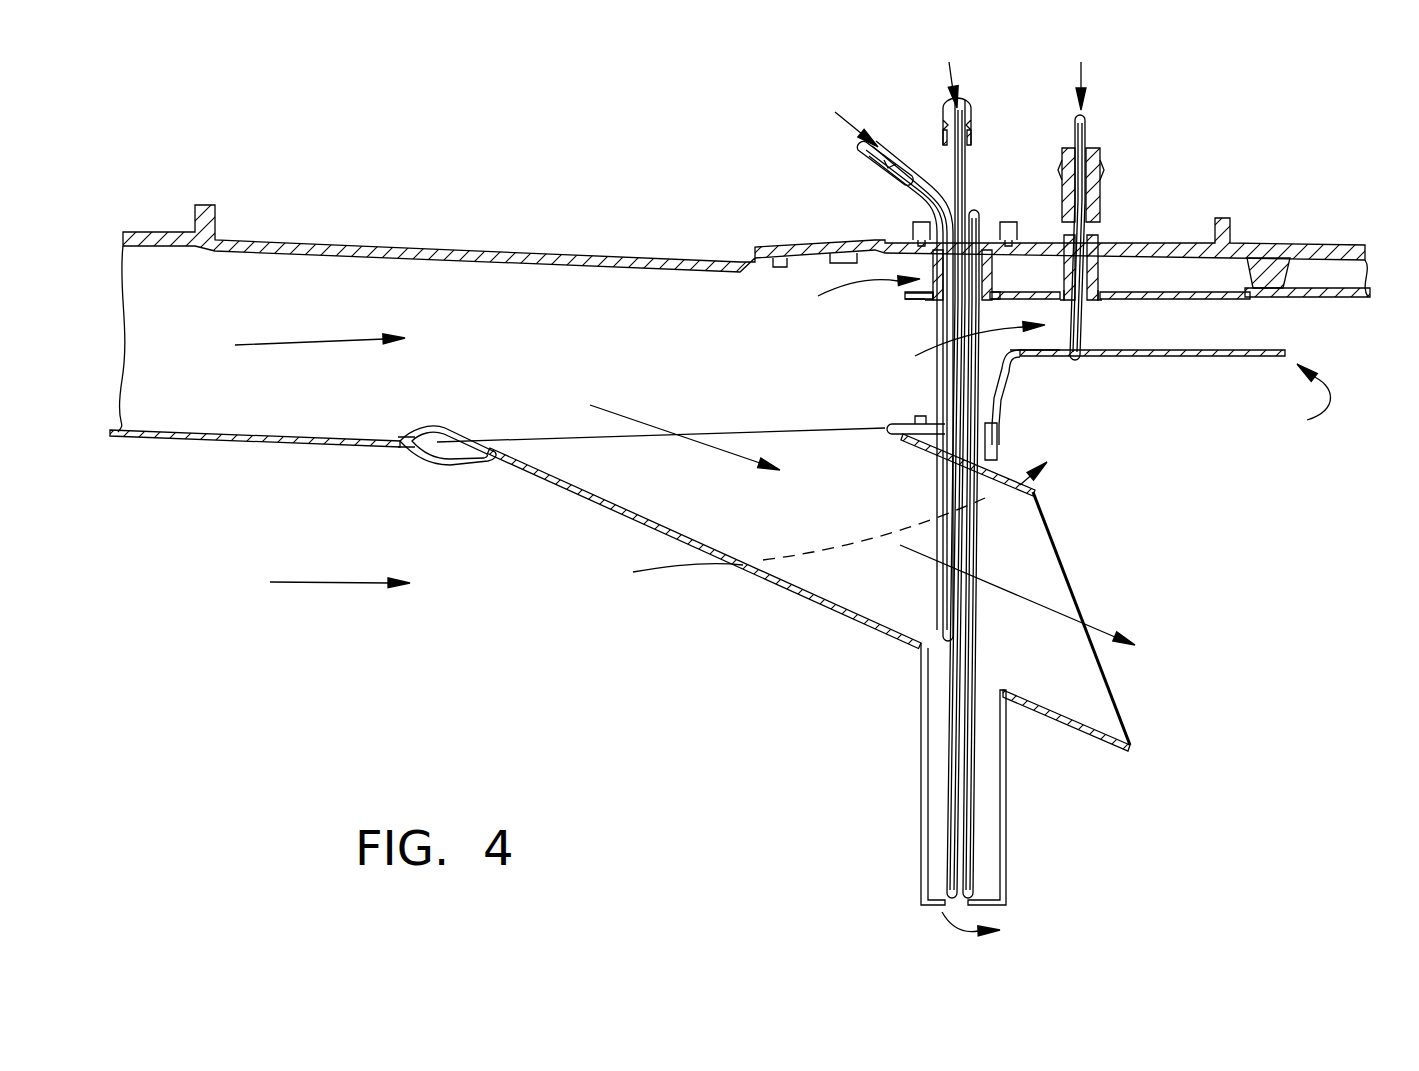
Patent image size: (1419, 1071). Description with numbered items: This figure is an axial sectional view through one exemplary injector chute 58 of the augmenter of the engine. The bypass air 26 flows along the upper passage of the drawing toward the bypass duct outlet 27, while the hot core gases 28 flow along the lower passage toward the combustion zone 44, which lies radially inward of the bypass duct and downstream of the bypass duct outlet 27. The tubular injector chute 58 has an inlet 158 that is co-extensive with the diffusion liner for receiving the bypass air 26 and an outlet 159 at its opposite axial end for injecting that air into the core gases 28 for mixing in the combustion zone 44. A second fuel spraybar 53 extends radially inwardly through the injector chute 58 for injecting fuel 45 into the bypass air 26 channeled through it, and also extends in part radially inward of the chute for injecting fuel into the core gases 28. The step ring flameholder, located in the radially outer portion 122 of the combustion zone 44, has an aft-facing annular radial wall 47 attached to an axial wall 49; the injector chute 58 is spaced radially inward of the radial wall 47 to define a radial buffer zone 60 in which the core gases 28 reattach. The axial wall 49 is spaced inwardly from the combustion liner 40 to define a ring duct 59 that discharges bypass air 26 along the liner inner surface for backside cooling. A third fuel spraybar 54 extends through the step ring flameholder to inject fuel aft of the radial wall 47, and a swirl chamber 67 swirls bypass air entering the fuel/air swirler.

The bypass air 26 is at (633, 413).
The bypass duct outlet 27 is at (556, 420).
The core gases 28 is at (320, 583).
The combustion liner 40 is at (1352, 297).
The combustion zone 44 is at (1275, 622).
The fuel 45 is at (835, 112).
The aft-facing annular radial wall 47 is at (1010, 390).
The axial wall 49 is at (1250, 357).
The second fuel spraybars 53 is at (898, 147).
The third fuel spraybars 54 is at (1092, 128).
The injector chute 58 is at (860, 651).
The ring duct 59 is at (1190, 337).
The radial buffer zone 60 is at (1007, 445).
The swirl chamber 67 is at (1027, 377).
The radially outer portion 122 is at (1295, 400).
The inlet 158 is at (770, 432).
The outlet 159 is at (1068, 580).